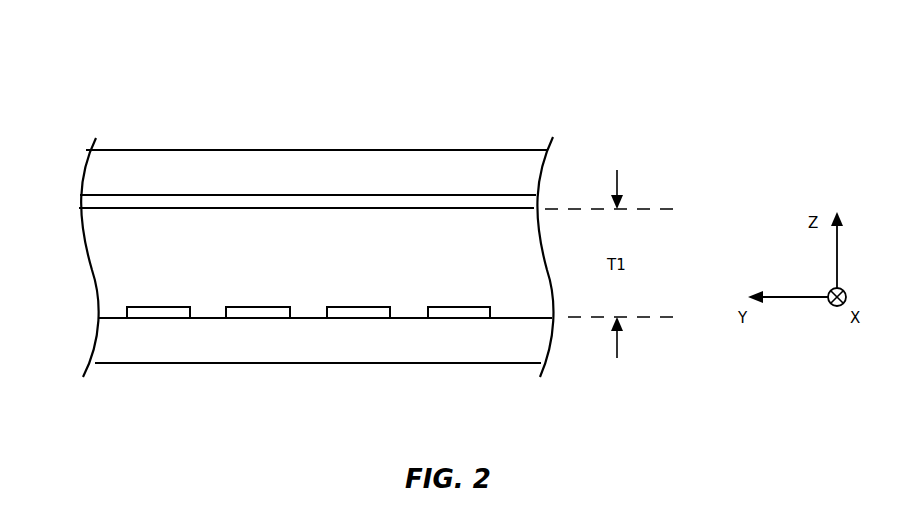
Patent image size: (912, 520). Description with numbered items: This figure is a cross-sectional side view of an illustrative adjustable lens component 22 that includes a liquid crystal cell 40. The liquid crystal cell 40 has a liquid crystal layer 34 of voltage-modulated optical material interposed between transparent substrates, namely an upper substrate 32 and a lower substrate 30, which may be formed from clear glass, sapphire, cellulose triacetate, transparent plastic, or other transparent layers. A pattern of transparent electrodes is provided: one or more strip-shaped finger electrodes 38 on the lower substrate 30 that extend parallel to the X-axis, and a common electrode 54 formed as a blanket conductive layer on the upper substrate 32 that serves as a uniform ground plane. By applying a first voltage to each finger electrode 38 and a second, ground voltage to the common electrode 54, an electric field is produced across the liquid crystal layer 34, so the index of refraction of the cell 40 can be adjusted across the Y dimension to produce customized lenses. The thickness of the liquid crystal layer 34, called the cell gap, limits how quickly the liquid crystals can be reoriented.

The adjustable lens component 22 is at (550, 75).
The lower substrate 30 is at (385, 357).
The upper substrate 32 is at (367, 157).
The liquid crystal layer 34 is at (467, 218).
The electrodes 38 is at (230, 307).
The liquid crystal cell 40 is at (70, 150).
The common electrode 54 is at (144, 200).